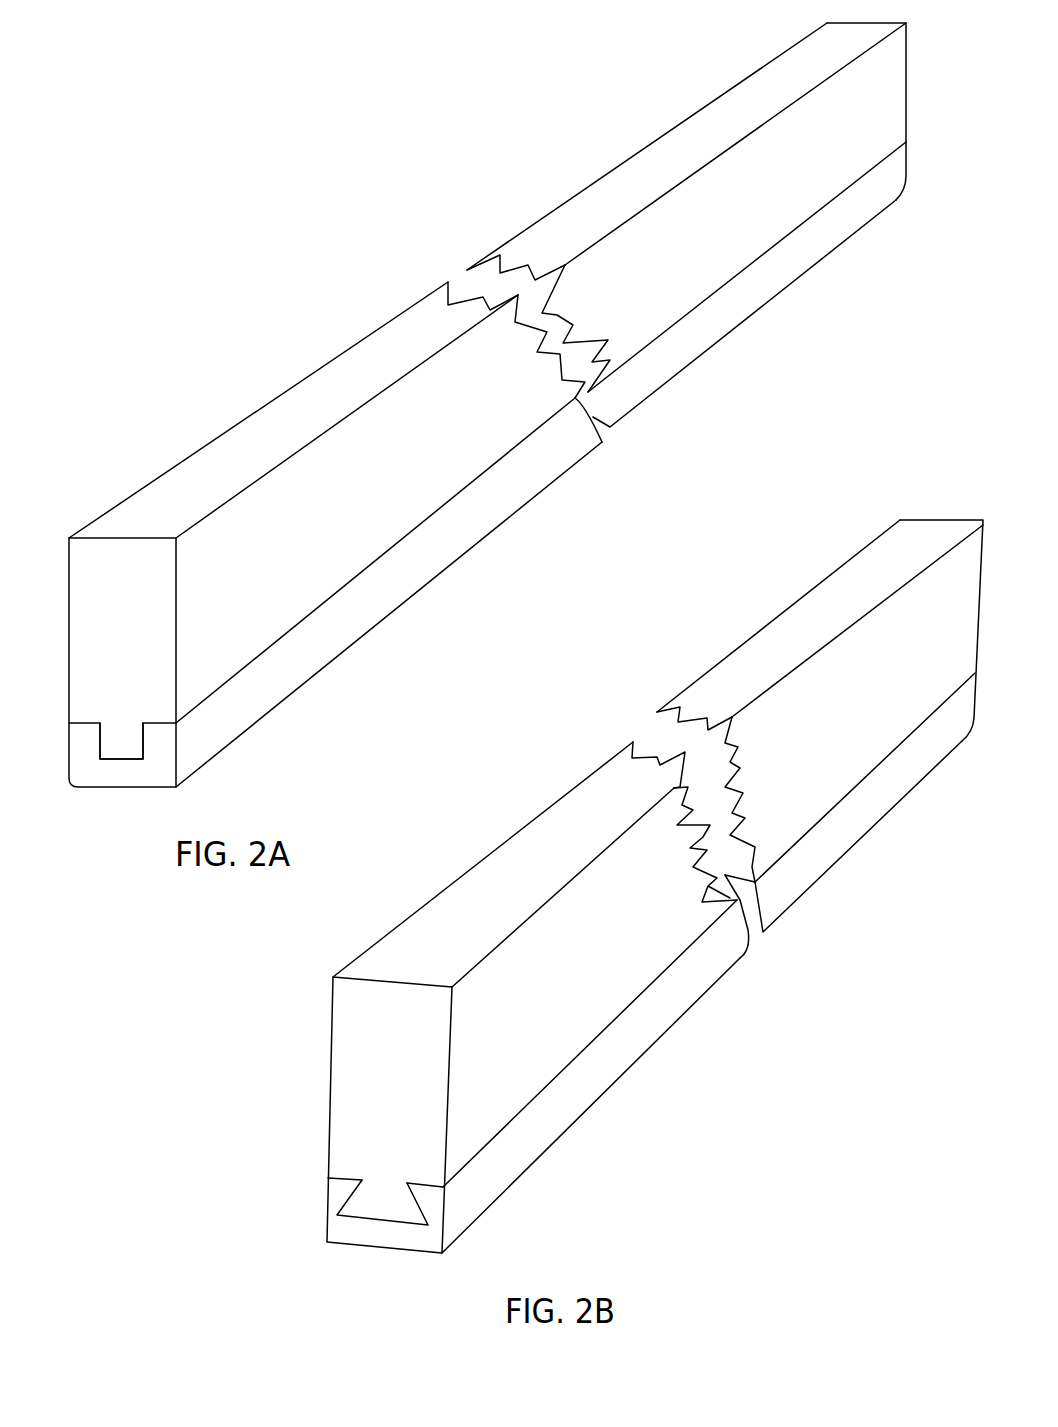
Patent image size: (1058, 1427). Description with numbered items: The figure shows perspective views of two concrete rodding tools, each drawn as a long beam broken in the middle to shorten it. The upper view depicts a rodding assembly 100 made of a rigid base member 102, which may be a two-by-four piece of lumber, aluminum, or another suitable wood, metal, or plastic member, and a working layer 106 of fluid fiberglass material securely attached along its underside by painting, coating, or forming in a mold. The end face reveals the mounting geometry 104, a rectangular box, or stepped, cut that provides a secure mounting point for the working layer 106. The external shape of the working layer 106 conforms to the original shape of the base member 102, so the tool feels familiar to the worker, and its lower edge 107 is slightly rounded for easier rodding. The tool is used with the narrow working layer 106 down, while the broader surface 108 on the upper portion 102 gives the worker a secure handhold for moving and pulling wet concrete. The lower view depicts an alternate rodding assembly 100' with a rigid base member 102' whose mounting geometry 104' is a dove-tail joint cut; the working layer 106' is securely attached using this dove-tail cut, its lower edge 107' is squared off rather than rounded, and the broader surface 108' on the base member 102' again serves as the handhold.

In FIG. 2A, the rodding assembly 100 is at (686, 146).
In FIG. 2A, the rigid base member 102 is at (293, 534).
In FIG. 2A, the mounting geometry 104 is at (221, 741).
In FIG. 2A, the working layer 106 is at (335, 592).
In FIG. 2A, the lower edge 107 is at (686, 319).
In FIG. 2A, the broader surface 108 is at (380, 431).
In FIG. 2B, the rodding assembly 100' is at (820, 583).
In FIG. 2B, the rigid base member 102' is at (445, 997).
In FIG. 2B, the mounting geometry 104' is at (296, 1237).
In FIG. 2B, the working layer 106' is at (651, 963).
In FIG. 2B, the lower edge 107' is at (748, 923).
In FIG. 2B, the broader surface 108' is at (598, 963).